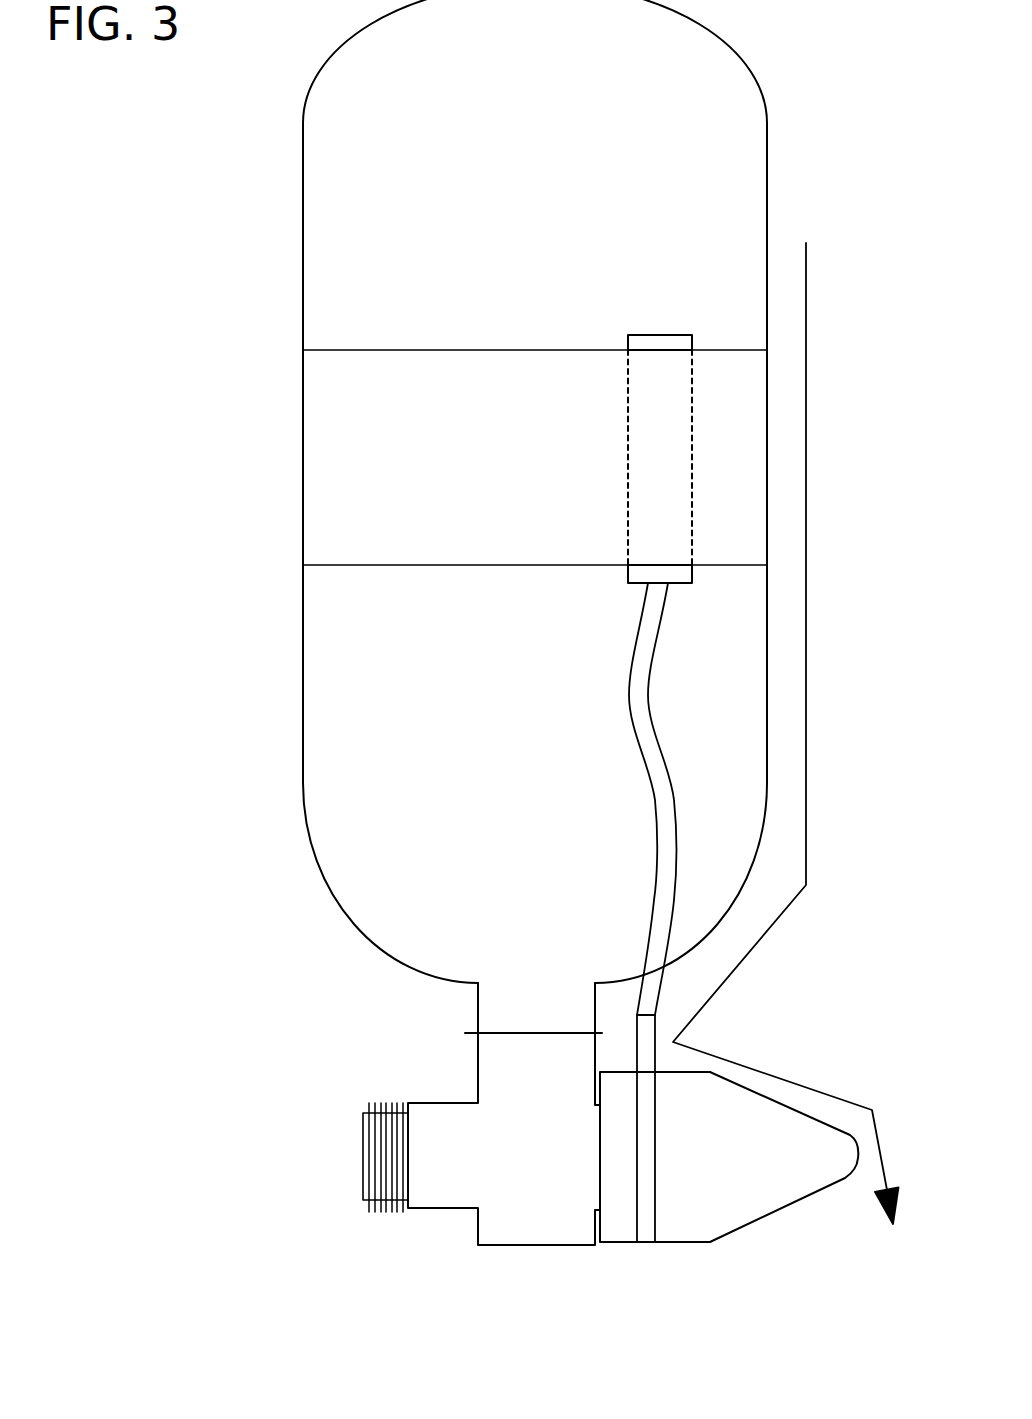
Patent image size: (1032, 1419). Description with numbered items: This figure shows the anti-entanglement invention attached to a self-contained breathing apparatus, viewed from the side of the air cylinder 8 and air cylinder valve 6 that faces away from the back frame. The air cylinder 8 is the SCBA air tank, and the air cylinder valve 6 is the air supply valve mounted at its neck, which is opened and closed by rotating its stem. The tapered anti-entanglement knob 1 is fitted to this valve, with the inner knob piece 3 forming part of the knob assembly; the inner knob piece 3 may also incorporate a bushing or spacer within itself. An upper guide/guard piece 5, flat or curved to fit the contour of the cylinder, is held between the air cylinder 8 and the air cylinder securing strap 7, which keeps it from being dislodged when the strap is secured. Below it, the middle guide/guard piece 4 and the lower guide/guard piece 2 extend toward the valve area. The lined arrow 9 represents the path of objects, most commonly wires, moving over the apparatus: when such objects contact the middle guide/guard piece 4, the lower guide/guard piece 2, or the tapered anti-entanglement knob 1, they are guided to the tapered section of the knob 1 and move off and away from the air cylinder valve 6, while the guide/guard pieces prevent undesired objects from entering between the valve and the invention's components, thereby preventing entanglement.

The tapered anti-entanglement knob 1 is at (712, 1178).
The lower guide/guard piece 2 is at (650, 1193).
The inner knob piece 3 is at (622, 1217).
The middle guide/guard piece 4 is at (646, 747).
The upper guide/guard piece 5 is at (658, 465).
The air cylinder valve 6 is at (518, 1147).
The air cylinder securing strap 7 is at (400, 519).
The air cylinder 8 is at (365, 230).
The lined arrow 9 is at (786, 717).